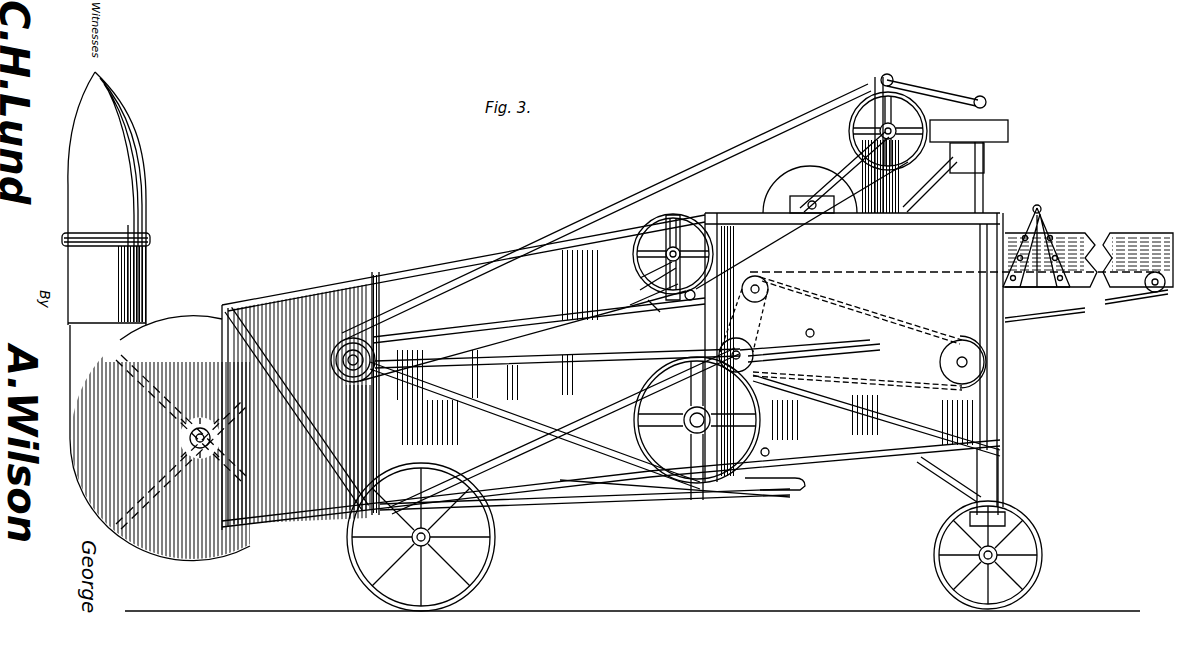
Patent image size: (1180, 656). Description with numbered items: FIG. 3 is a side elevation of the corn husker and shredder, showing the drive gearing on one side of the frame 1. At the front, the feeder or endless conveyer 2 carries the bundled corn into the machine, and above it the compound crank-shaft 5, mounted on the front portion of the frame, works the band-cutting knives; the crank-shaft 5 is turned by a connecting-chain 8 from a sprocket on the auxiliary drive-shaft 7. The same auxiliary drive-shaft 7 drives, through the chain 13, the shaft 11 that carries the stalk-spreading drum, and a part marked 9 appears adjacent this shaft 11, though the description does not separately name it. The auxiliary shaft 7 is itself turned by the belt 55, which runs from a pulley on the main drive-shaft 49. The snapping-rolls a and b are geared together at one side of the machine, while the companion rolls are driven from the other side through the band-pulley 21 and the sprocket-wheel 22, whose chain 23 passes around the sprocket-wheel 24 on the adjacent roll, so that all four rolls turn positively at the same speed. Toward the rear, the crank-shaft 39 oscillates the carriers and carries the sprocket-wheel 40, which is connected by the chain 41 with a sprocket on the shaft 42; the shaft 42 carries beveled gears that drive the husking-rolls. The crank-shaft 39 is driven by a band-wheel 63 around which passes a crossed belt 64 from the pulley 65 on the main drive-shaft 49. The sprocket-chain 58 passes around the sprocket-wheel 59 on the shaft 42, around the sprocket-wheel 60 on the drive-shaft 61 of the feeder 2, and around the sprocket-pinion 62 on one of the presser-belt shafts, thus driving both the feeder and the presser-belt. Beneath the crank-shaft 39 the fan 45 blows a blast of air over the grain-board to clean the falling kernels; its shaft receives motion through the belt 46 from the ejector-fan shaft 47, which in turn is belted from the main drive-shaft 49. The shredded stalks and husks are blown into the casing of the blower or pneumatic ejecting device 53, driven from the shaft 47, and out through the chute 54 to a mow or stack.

The frame 1 is at (545, 303).
The feeder 2 is at (1120, 302).
The compound crank-shaft 5 is at (985, 160).
The auxiliary drive-shaft 7 is at (890, 125).
The connecting-chain 8 is at (930, 184).
The cylinder 9 is at (785, 175).
The shaft 11 is at (816, 213).
The chain 13 is at (845, 150).
The band-pulley 21 is at (640, 270).
The sprocket-wheel 22 is at (640, 282).
The chain 23 is at (630, 296).
The sprocket-wheel 24 is at (652, 305).
The crank-shaft 39 is at (686, 430).
The sprocket-wheel 40 is at (684, 412).
The chain 41 is at (800, 348).
The shaft 42 is at (749, 330).
The fan 45 is at (770, 456).
The belt 46 is at (748, 496).
The ejector-fan shaft 47 is at (202, 428).
The main drive-shaft 49 is at (366, 300).
The blower or pneumatic ejecting device 53 is at (160, 439).
The chute 54 is at (118, 150).
The belt 55 is at (643, 206).
The sprocket-chain 58 is at (900, 316).
The sprocket-wheel 59 is at (785, 347).
The sprocket-wheel 60 is at (749, 342).
The drive-shaft 61 is at (768, 296).
The sprocket-pinion 62 is at (975, 355).
The band-wheel 63 is at (698, 490).
The crossed belt 64 is at (548, 360).
The pulley 65 is at (345, 340).
The snapping-roll a is at (686, 212).
The snapping-roll b is at (539, 319).